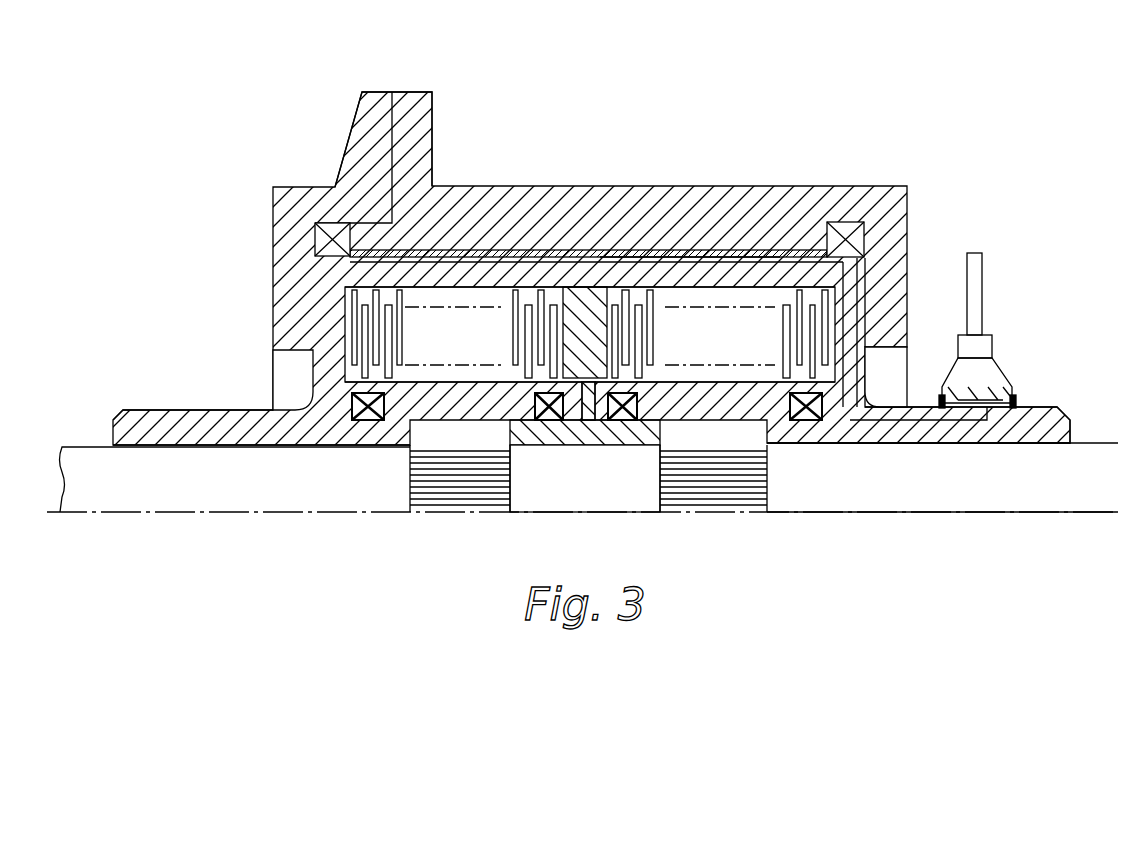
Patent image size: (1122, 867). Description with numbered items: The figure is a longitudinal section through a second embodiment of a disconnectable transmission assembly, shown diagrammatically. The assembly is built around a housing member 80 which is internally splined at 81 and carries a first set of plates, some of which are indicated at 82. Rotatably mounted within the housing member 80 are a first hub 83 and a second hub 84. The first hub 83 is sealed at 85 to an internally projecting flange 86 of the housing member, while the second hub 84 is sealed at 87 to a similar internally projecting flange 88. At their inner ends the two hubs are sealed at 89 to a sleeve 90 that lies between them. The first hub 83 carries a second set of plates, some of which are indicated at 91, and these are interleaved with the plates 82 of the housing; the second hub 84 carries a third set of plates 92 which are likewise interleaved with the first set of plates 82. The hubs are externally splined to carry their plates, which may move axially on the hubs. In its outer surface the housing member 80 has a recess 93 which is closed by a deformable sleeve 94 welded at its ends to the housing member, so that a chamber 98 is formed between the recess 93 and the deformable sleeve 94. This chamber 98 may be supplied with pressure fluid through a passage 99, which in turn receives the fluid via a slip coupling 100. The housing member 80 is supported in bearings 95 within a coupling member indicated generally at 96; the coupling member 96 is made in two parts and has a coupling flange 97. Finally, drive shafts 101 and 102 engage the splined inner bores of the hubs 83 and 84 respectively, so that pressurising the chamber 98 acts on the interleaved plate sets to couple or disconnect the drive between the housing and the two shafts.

The housing member 80 is at (470, 273).
The internal splines 81 is at (493, 288).
The first set of plates 82 is at (352, 300).
The first hub 83 is at (480, 425).
The second hub 84 is at (735, 421).
The seal 85 is at (368, 422).
The internally projecting flange 86 is at (393, 442).
The seal 87 is at (806, 422).
The internally projecting flange 88 is at (775, 440).
The seals 89 is at (548, 422).
The sleeve 90 is at (600, 446).
The second set of plates 91 is at (362, 347).
The third set of plates 92 is at (640, 342).
The recess 93 is at (572, 251).
The deformable sleeve 94 is at (648, 250).
The bearings 95 is at (322, 240).
The coupling member 96 is at (460, 175).
The coupling flange 97 is at (413, 100).
The chamber 98 is at (735, 256).
The passage 99 is at (848, 325).
The slip coupling 100 is at (988, 373).
The drive shaft 101 is at (215, 490).
The drive shaft 102 is at (1052, 487).